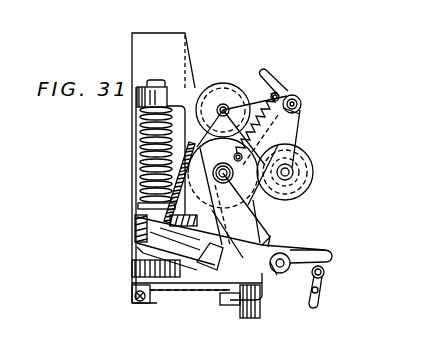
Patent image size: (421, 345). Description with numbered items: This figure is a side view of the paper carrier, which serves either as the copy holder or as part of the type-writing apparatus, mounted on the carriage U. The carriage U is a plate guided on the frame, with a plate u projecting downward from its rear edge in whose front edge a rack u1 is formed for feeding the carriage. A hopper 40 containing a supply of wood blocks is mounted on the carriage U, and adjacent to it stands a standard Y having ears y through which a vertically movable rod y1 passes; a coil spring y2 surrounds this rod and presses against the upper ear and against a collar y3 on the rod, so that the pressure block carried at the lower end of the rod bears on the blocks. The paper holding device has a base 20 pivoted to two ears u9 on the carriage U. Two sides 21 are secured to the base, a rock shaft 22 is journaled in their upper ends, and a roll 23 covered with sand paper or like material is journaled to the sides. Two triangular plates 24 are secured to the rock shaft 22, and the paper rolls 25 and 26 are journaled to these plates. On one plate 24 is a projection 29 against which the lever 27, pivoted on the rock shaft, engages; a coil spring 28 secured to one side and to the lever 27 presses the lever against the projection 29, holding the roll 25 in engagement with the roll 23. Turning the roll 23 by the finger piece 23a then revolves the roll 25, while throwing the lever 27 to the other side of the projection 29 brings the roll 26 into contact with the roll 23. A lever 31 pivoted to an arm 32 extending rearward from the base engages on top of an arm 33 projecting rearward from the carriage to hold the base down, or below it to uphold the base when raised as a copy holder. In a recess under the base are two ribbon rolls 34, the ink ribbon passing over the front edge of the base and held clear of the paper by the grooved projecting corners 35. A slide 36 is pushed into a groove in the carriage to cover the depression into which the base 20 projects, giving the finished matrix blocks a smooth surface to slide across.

The hopper 40 is at (185, 33).
The vertically movable rod y1 is at (153, 82).
The standard Y is at (173, 100).
The ears y is at (135, 100).
The coil spring y2 is at (143, 147).
The collar y3 is at (138, 205).
The roll 23 is at (211, 182).
The paper roll 25 is at (226, 85).
The triangular plates 24 is at (298, 142).
The rock shaft 22 is at (303, 103).
The projection 29 is at (301, 113).
The lever 27 is at (273, 78).
The coil spring 28 is at (257, 126).
The roll 26 is at (313, 180).
The finger piece 23a is at (260, 196).
The sides 21 is at (221, 203).
The base 20 is at (243, 248).
The ribbon rolls 34 is at (203, 268).
The grooved projecting corners 35 is at (143, 253).
The slide 36 is at (132, 278).
The carriage U is at (207, 292).
The rack u1 is at (245, 310).
The plate u is at (255, 300).
The ears u9 is at (274, 282).
The arm 33 is at (328, 254).
The arm 32 is at (325, 273).
The lever 31 is at (320, 292).